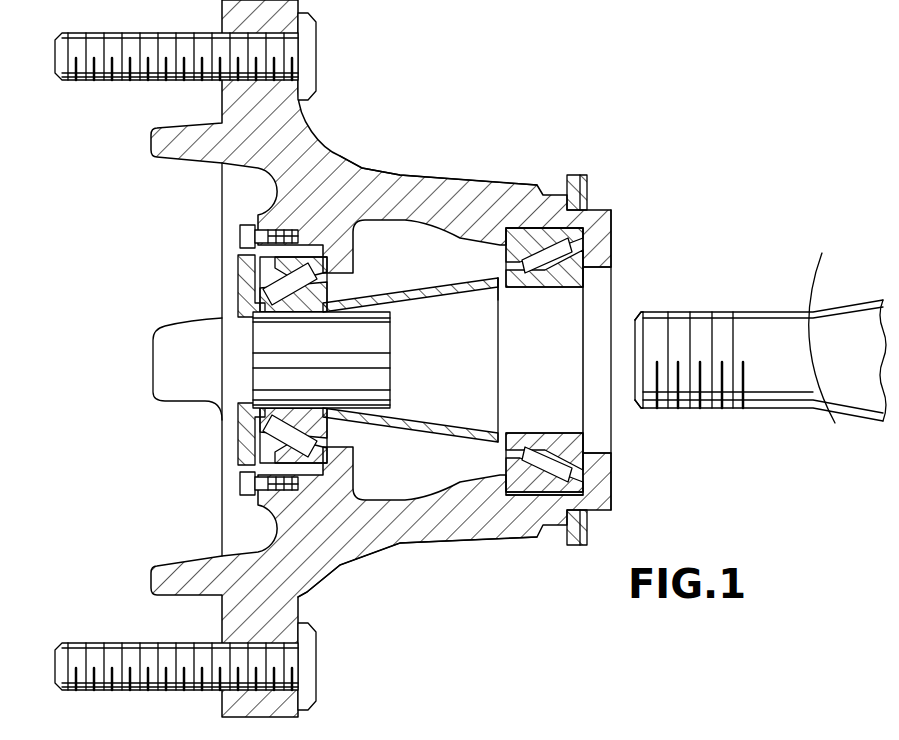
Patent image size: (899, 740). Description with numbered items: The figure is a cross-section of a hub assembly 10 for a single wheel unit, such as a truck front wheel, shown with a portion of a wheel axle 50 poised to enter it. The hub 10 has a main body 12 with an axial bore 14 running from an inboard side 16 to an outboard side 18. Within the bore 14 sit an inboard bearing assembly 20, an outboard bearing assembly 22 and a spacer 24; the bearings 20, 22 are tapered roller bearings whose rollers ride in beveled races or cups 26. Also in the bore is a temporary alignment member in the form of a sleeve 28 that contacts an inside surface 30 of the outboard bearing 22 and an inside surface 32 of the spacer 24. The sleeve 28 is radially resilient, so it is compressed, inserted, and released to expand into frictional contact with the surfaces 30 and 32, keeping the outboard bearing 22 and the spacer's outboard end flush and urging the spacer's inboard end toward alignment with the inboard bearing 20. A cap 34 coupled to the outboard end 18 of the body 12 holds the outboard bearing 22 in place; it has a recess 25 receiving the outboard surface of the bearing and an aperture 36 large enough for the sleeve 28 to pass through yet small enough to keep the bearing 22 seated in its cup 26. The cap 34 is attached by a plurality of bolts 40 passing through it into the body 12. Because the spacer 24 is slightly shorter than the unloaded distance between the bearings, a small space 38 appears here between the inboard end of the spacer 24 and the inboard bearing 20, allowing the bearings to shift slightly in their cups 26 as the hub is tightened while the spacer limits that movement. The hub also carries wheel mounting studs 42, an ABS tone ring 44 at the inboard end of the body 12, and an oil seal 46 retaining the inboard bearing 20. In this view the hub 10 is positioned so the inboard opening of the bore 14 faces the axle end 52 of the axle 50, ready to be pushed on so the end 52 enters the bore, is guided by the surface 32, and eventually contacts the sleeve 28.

The hub assembly 10 is at (373, 358).
The main body 12 is at (358, 160).
The axial bore 14 is at (436, 236).
The inboard side 16 is at (753, 338).
The outboard side 18 is at (112, 304).
The inboard bearing assembly 20 is at (538, 290).
The outboard bearing assembly 22 is at (253, 334).
The spacer 24 is at (457, 443).
The recess 25 is at (252, 444).
The races or cups 26 is at (313, 480).
The temporary alignment member 28 is at (253, 374).
The inside surface 30 is at (318, 314).
The inside surface 32 is at (437, 416).
The cap 34 is at (238, 282).
The aperture 36 is at (240, 407).
The space 38 is at (502, 278).
The bolts 40 is at (240, 236).
The wheel mounting studs 42 is at (128, 82).
The ABS tone ring 44 is at (572, 546).
The oil seal 46 is at (612, 475).
The wheel axle 50 is at (770, 410).
The axle end 52 is at (634, 360).